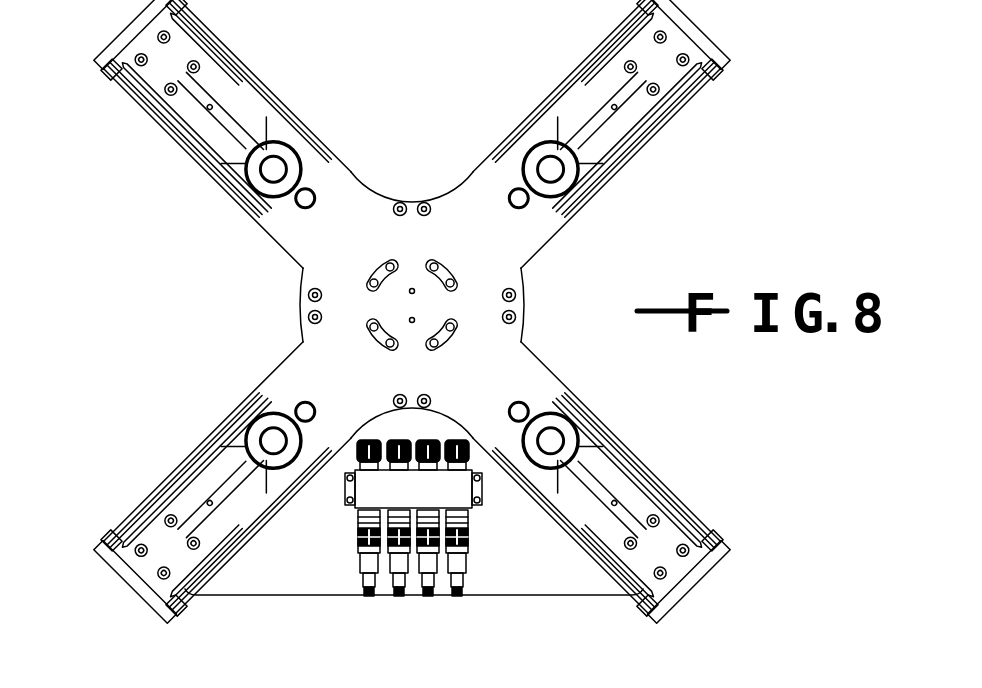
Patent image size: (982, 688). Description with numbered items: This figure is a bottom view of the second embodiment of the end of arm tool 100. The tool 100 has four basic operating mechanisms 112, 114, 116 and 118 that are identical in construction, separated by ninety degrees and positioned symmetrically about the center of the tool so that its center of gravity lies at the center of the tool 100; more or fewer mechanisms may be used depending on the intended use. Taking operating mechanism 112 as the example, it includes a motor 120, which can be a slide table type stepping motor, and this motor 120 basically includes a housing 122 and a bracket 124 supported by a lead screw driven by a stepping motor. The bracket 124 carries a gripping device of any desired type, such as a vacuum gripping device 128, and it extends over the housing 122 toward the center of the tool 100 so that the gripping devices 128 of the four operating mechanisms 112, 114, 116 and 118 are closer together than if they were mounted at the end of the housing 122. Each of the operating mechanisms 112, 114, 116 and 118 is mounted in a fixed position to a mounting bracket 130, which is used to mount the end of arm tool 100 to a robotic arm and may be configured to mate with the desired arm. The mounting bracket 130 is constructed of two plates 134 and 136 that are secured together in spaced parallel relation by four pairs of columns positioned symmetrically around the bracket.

The end of arm tool 100 is at (420, 168).
The operating mechanism 112 is at (567, 530).
The operating mechanism 114 is at (143, 495).
The operating mechanism 116 is at (268, 86).
The operating mechanism 118 is at (553, 90).
The motor 120 is at (615, 603).
The housing 122 is at (700, 530).
The bracket 124 is at (672, 538).
The vacuum gripping device 128 is at (567, 430).
The mounting bracket 130 is at (538, 304).
The plate 134 is at (526, 358).
The plate 136 is at (287, 597).